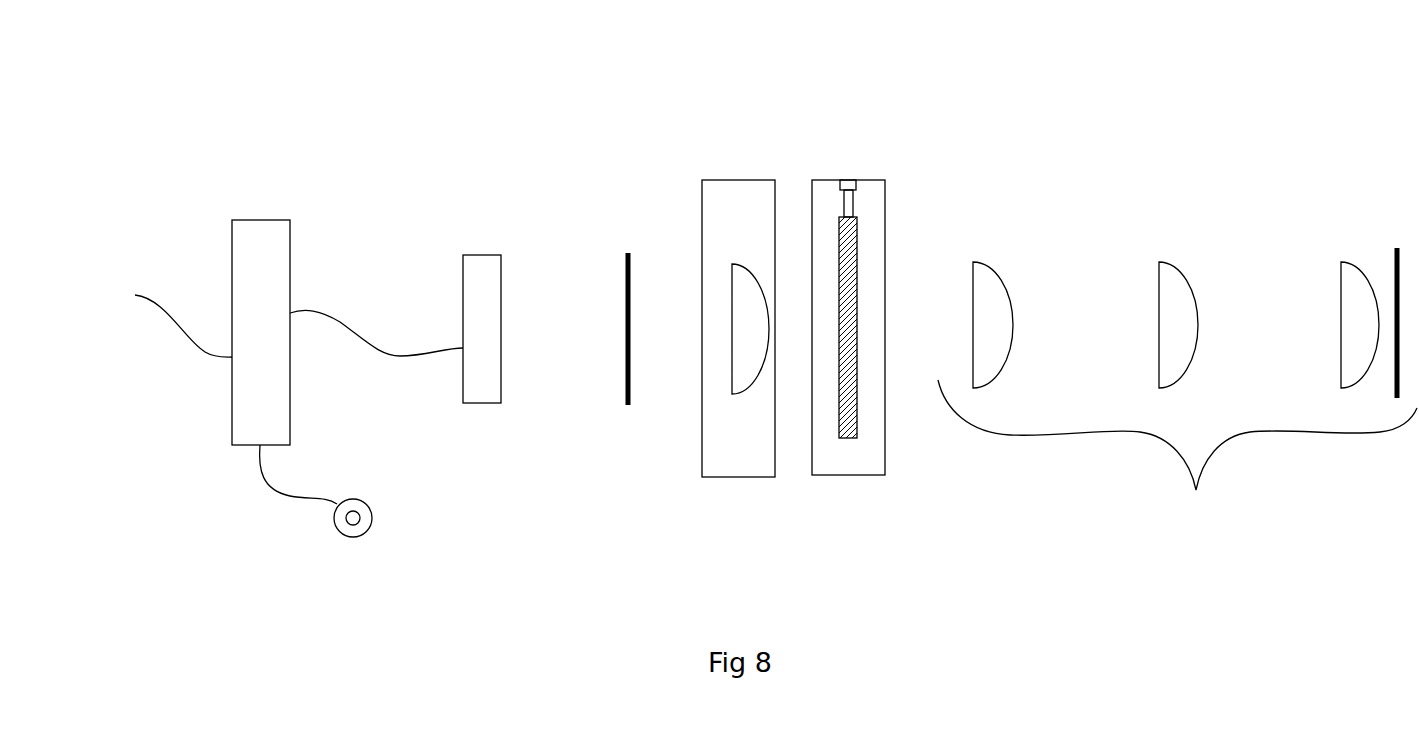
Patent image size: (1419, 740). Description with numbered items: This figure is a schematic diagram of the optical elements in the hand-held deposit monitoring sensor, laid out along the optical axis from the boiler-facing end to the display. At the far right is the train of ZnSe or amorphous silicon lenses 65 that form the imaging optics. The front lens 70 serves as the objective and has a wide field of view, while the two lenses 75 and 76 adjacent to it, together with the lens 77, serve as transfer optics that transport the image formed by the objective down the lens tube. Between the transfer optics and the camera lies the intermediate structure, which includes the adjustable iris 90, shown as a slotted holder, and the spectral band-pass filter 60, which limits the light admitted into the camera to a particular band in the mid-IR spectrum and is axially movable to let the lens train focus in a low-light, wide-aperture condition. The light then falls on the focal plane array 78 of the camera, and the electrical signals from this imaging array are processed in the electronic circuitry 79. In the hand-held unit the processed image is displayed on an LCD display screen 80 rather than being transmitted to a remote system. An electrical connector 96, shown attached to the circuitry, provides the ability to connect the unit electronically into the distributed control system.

The LCD display screen 80 is at (170, 175).
The electronic circuitry 79 is at (282, 209).
The focal plane array 78 is at (481, 206).
The electrical connector 96 is at (367, 500).
The spectral band-pass filter 60 is at (625, 186).
The transfer lens 77 is at (703, 154).
The adjustable iris 90 is at (842, 142).
The transfer lens 76 is at (1011, 302).
The transfer lens 75 is at (1160, 262).
The front lens 70 is at (1342, 262).
The lenses 65 is at (1177, 460).